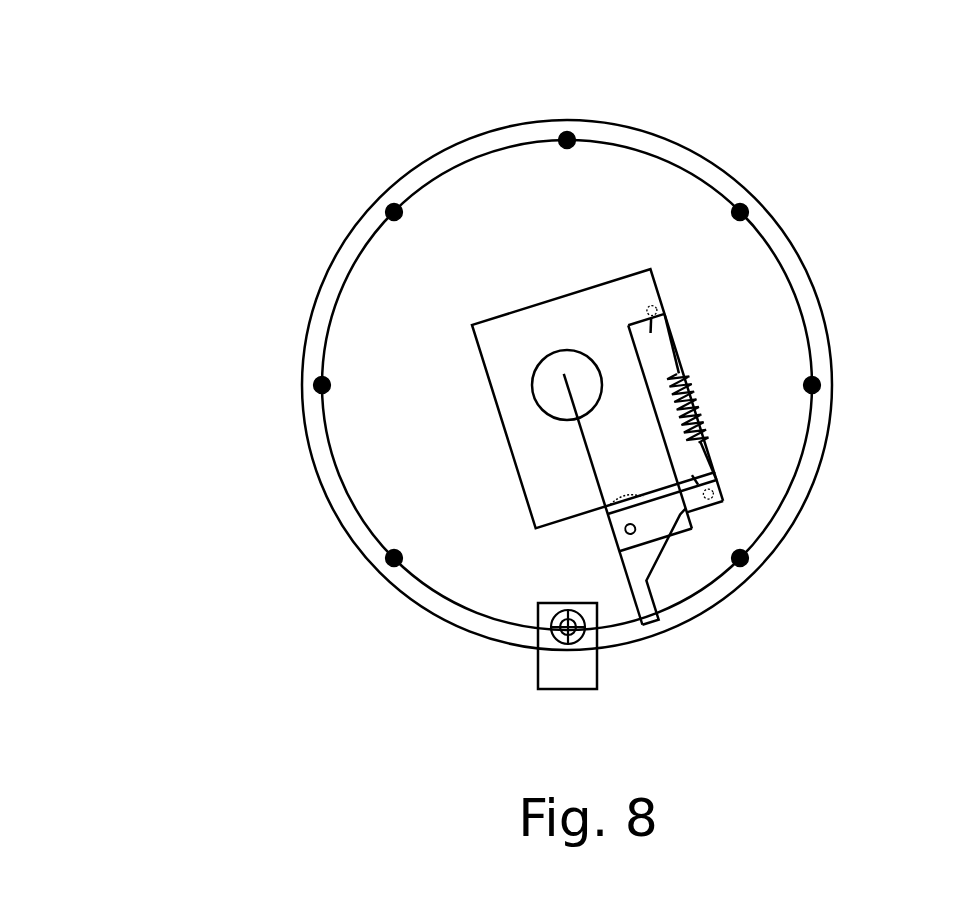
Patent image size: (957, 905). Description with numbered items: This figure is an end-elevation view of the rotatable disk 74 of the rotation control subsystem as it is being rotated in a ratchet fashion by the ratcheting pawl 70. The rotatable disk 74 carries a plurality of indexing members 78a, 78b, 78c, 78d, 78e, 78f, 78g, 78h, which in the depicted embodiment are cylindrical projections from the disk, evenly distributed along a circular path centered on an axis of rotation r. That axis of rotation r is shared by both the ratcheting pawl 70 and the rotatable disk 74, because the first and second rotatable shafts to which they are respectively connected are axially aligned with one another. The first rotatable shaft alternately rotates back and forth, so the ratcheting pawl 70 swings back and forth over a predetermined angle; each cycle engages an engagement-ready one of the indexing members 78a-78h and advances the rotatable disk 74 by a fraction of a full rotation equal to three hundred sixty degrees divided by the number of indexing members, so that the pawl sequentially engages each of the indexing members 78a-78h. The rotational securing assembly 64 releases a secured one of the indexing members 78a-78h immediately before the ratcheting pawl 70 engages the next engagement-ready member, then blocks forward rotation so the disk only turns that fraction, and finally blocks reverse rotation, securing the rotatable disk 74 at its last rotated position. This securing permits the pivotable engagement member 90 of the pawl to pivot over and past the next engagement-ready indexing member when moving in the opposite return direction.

The ratcheting pawl 70 is at (703, 325).
The rotatable disk 74 is at (547, 231).
The indexing member 78a is at (568, 133).
The indexing member 78b is at (746, 208).
The indexing member 78c is at (819, 384).
The indexing member 78d is at (747, 561).
The indexing member 78e is at (556, 634).
The indexing member 78f is at (389, 563).
The indexing member 78g is at (315, 384).
The indexing member 78h is at (389, 208).
The rotational securing assembly 64 is at (590, 667).
The pivotable engagement member 90 is at (700, 590).
The axis of rotation r is at (558, 386).